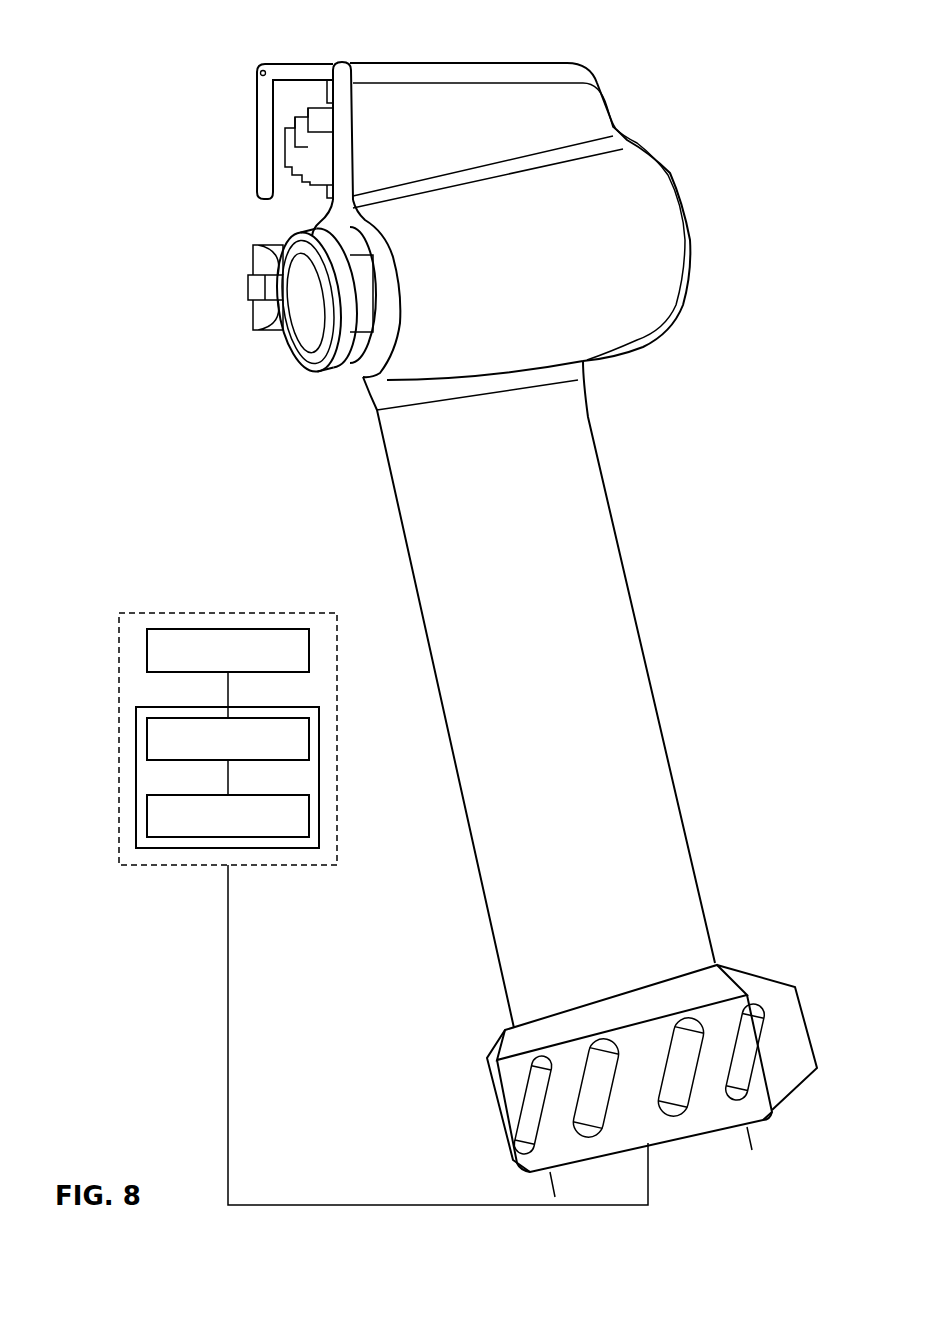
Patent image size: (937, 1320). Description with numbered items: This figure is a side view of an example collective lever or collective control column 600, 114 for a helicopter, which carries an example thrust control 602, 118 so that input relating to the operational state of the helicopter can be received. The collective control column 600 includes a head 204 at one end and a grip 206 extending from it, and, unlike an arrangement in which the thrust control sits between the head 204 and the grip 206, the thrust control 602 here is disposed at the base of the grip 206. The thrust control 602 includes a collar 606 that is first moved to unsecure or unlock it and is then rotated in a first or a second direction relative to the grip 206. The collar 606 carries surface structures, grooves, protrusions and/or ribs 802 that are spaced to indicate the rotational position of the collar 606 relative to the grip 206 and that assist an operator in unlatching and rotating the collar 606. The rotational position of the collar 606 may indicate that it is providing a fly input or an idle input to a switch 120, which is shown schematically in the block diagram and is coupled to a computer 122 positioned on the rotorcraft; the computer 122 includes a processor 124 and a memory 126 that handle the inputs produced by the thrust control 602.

The collective control column 600 is at (225, 108).
The collective control column 114 is at (253, 56).
The head 204 is at (687, 58).
The grip 206 is at (617, 633).
The thrust control 602 is at (673, 1037).
The thrust control 118 is at (673, 1037).
The collar 606 is at (806, 1013).
The protrusions 802 is at (771, 1136).
The switch 120 is at (147, 650).
The computer 122 is at (136, 773).
The processor 124 is at (147, 738).
The memory 126 is at (147, 813).